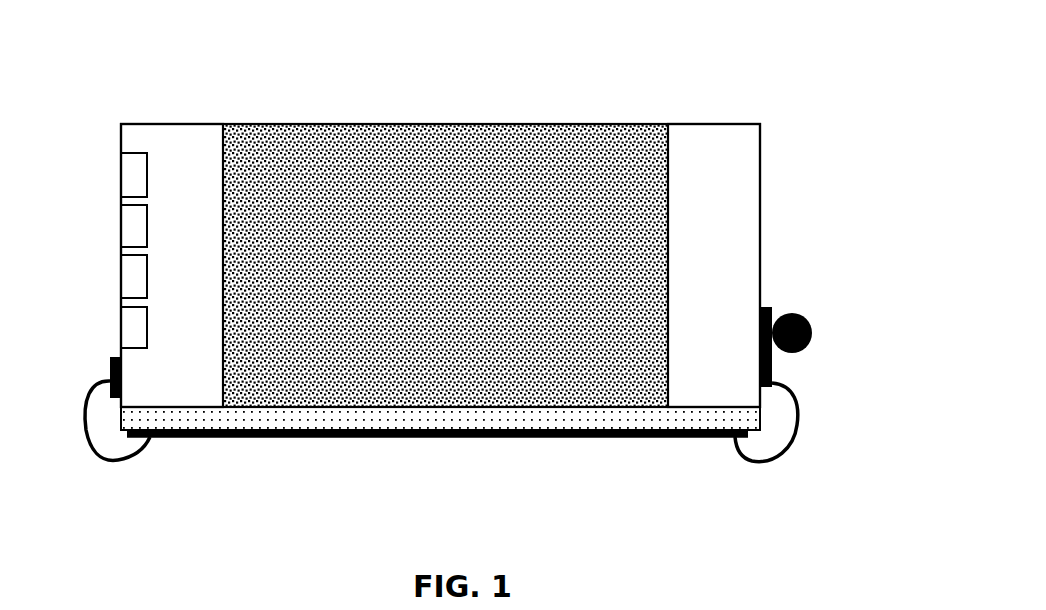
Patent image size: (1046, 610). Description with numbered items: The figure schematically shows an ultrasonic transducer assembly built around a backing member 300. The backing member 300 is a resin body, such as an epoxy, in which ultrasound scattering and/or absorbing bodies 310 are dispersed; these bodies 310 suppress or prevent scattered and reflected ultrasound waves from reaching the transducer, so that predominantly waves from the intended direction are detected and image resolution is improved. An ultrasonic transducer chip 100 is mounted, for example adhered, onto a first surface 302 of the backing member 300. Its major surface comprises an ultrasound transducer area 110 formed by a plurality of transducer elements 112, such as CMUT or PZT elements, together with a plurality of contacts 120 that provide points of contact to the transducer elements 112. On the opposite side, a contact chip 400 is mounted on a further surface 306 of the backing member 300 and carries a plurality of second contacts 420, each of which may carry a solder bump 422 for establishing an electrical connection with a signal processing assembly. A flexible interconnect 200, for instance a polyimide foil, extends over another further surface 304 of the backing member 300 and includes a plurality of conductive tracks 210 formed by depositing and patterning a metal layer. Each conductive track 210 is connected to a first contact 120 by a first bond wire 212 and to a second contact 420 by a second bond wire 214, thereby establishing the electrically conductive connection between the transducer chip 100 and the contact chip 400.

The ultrasonic transducer chip 100 is at (131, 140).
The ultrasound transducer area 110 is at (121, 300).
The transducer elements 112 is at (125, 220).
The contacts 120 is at (112, 360).
The flexible interconnect 200 is at (580, 422).
The conductive tracks 210 is at (163, 437).
The first bond wire 212 is at (98, 457).
The second bond wire 214 is at (792, 445).
The backing member 300 is at (432, 153).
The first surface 302 is at (223, 165).
The further surface 304 is at (437, 410).
The further surface 306 is at (668, 238).
The ultrasound scattering and/or absorbing bodies 310 is at (548, 167).
The contact chip 400 is at (748, 166).
The second contacts 420 is at (772, 375).
The solder bump 422 is at (812, 325).